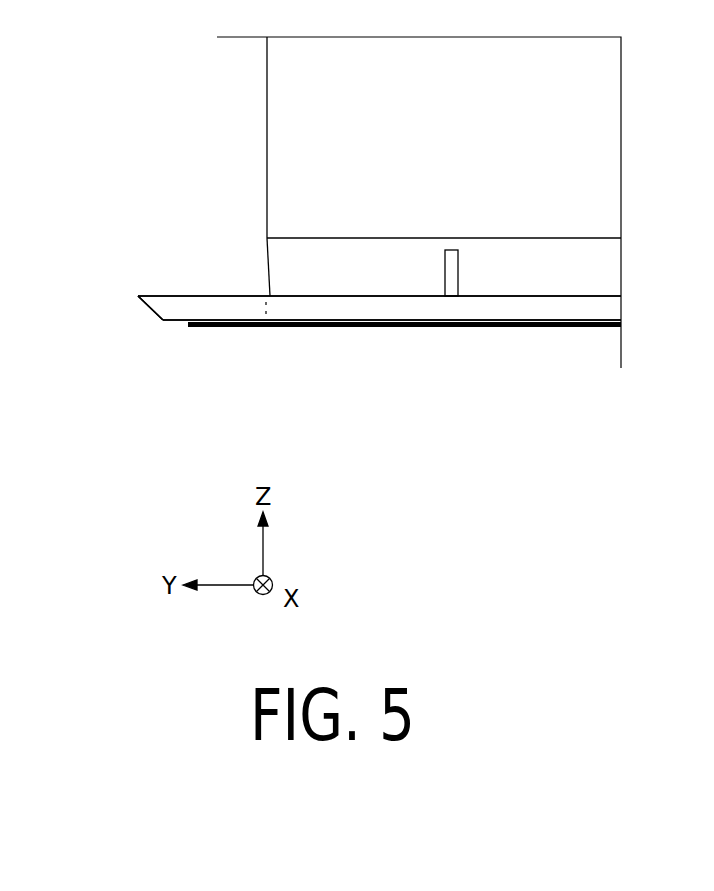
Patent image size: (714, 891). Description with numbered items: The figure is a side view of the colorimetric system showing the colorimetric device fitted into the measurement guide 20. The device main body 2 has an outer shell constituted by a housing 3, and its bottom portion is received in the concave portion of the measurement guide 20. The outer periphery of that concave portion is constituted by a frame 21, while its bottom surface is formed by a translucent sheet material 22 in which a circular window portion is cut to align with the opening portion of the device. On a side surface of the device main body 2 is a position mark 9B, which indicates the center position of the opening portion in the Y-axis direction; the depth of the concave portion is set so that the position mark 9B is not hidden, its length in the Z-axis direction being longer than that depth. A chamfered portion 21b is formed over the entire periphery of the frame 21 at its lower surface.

The device main body 2 is at (266, 100).
The housing 3 is at (277, 173).
The measurement guide 20 is at (170, 282).
The frame 21 is at (157, 292).
The chamfered portion 21b is at (151, 316).
The sheet material 22 is at (365, 329).
The position mark 9B is at (452, 272).